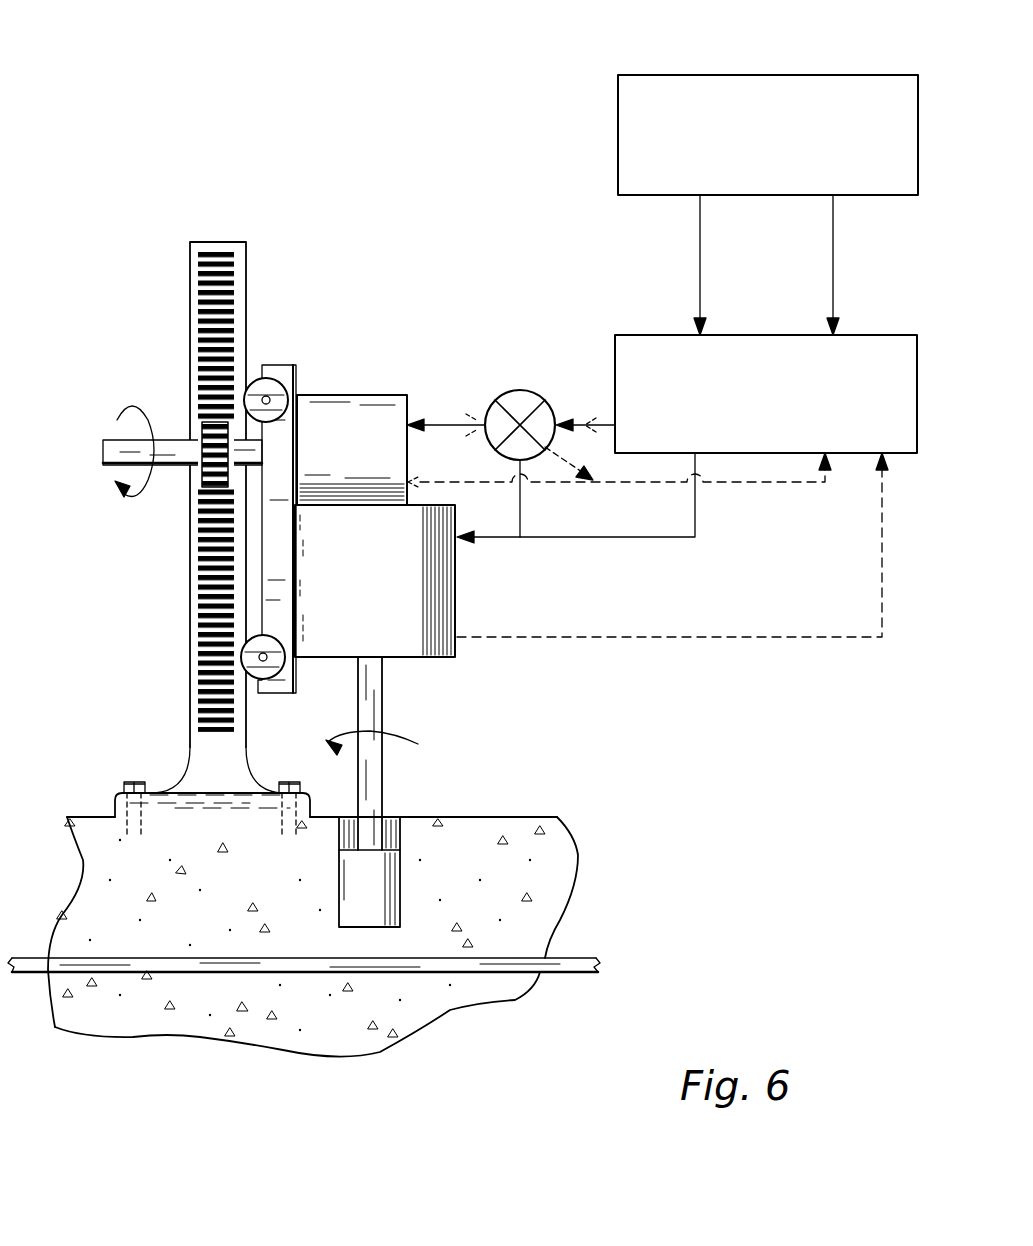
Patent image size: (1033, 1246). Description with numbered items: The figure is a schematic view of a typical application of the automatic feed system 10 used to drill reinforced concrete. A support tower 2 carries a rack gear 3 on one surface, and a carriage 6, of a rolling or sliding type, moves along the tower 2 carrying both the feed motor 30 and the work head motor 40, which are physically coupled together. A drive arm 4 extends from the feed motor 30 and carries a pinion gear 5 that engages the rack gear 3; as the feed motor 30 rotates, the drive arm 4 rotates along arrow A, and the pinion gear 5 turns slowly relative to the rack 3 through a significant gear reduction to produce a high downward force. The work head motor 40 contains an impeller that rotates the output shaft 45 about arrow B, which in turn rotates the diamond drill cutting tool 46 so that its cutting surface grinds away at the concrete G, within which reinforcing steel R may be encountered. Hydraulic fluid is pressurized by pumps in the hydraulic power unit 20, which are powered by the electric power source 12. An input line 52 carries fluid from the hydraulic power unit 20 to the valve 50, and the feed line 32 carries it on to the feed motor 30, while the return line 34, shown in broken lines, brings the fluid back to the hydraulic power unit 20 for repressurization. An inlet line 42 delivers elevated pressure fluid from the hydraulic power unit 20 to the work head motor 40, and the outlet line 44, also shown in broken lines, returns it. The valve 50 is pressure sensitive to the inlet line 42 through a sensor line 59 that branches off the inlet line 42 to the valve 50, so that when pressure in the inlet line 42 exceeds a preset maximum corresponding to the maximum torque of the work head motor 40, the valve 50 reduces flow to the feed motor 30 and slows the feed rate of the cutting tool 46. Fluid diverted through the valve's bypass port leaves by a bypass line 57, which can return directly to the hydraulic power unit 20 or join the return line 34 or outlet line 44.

The automatic feed system 10 is at (226, 97).
The support tower 2 is at (188, 268).
The rack gear 3 is at (213, 342).
The drive arm 4 is at (163, 460).
The pinion gear 5 is at (202, 427).
The carriage 6 is at (293, 368).
The electric power source 12 is at (675, 73).
The hydraulic power unit 20 is at (873, 333).
The feed motor 30 is at (338, 394).
The feed line 32 is at (455, 420).
The return line 34 is at (441, 480).
The work head motor 40 is at (458, 586).
The inlet line 42 is at (592, 537).
The outlet line 44 is at (583, 640).
The output shaft 45 is at (385, 695).
The diamond drill cutting tool 46 is at (383, 875).
The valve 50 is at (517, 390).
The input line 52 is at (581, 418).
The bypass line 57 is at (603, 464).
The sensor line 59 is at (523, 510).
The arrow A is at (119, 413).
The arrow B is at (425, 740).
The concrete G is at (557, 862).
The reinforcing steel R is at (592, 963).